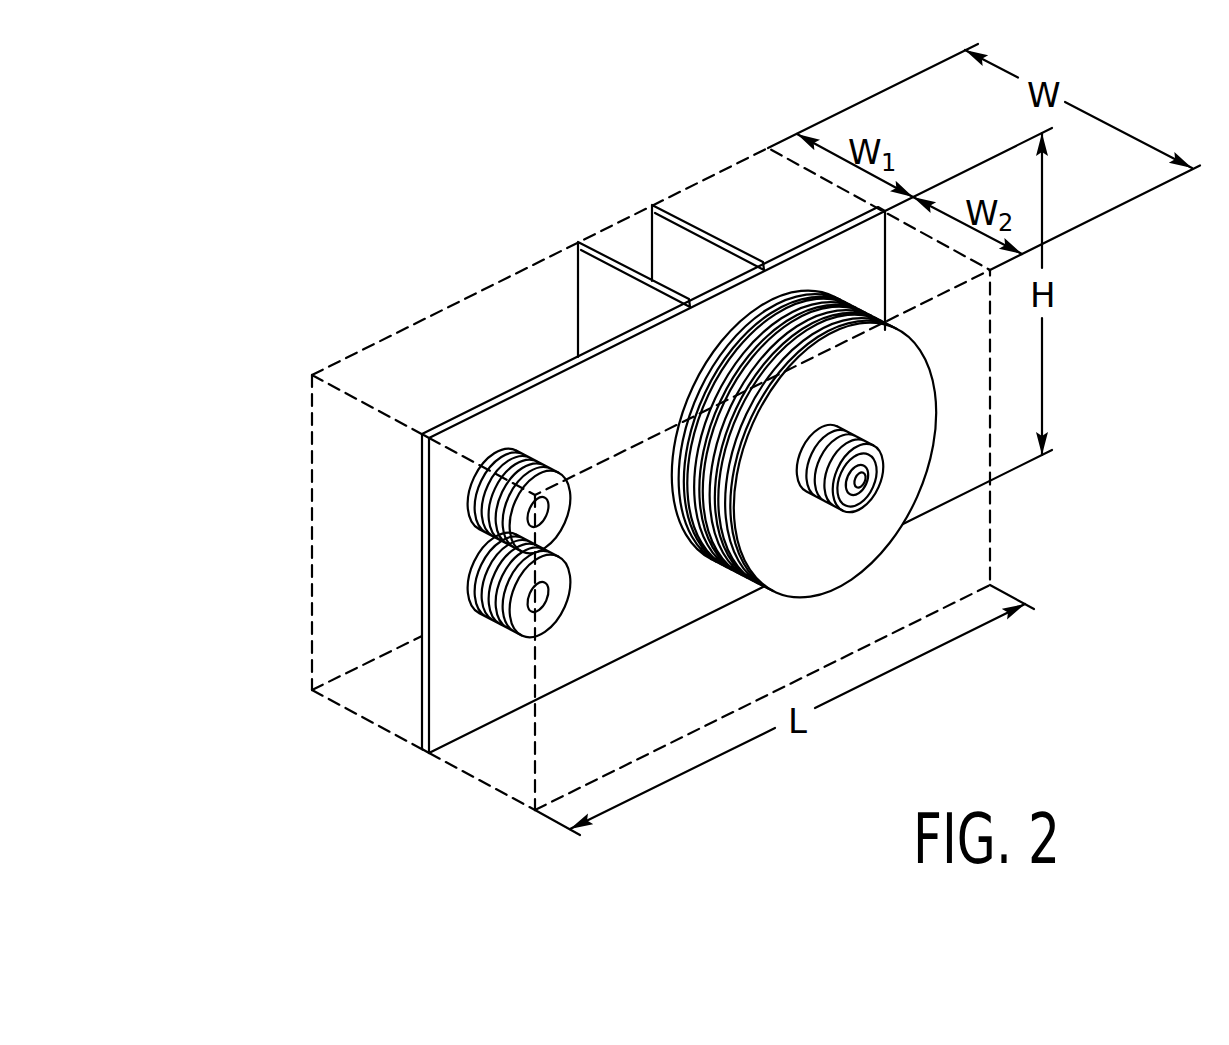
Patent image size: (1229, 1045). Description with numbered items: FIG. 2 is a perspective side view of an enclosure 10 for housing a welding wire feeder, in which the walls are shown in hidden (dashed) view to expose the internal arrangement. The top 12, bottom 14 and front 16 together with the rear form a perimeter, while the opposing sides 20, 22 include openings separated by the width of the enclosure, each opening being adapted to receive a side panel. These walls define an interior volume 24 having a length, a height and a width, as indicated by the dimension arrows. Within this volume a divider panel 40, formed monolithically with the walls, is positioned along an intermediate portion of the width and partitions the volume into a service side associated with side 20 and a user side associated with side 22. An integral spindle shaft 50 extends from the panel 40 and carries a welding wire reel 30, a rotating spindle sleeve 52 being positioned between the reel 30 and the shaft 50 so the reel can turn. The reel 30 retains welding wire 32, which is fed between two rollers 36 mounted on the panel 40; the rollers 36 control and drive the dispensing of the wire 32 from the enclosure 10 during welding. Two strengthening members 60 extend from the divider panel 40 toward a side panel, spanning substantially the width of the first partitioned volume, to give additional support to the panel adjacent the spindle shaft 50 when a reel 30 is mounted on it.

The enclosure 10 is at (266, 822).
The top 12 is at (367, 363).
The bottom 14 is at (382, 710).
The front 16 is at (345, 587).
The side 20 is at (335, 433).
The side 22 is at (650, 757).
The interior volume 24 is at (486, 754).
The welding wire reel 30 is at (932, 395).
The welding wire 32 is at (727, 570).
The rollers 36 is at (562, 470).
The divider panel 40 is at (627, 401).
The spindle shaft 50 is at (868, 483).
The spindle sleeve 52 is at (831, 518).
The strengthening member 60 is at (575, 285).